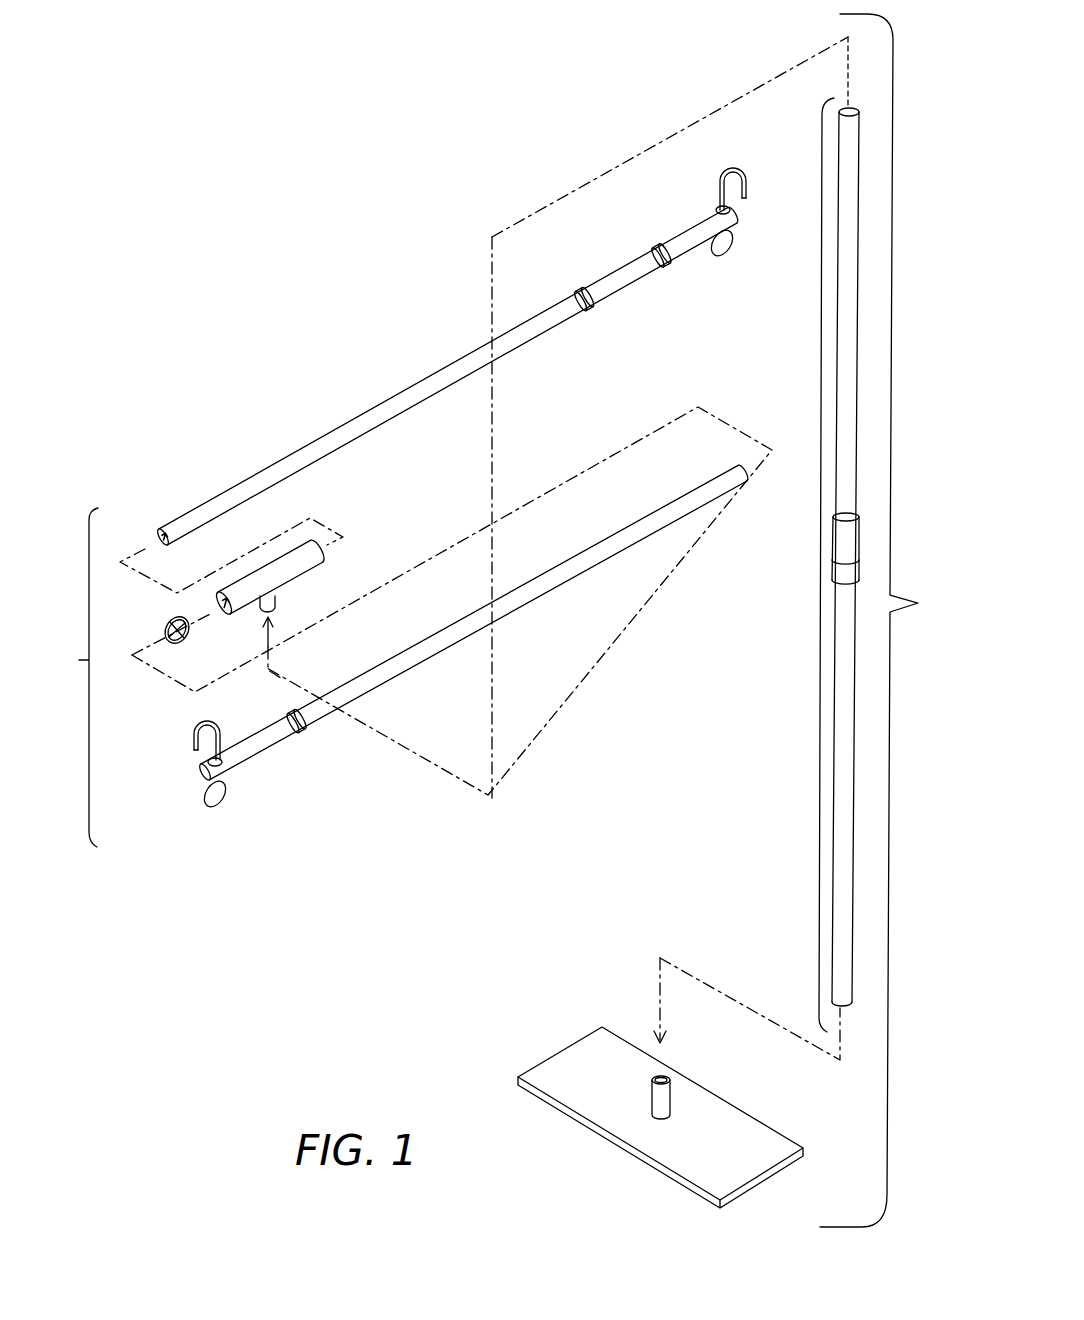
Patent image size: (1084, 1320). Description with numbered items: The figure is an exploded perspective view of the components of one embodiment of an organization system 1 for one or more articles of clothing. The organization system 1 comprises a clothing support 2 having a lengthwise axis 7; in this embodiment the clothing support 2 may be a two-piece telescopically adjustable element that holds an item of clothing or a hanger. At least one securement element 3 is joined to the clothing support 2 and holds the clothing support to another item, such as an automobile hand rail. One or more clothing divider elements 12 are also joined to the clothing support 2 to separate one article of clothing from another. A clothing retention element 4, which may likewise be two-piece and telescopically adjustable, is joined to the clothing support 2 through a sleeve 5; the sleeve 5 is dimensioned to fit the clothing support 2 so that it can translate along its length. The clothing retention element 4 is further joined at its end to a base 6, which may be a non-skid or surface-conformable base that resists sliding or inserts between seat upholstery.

The organization system 1 is at (889, 620).
The clothing support 2 is at (402, 378).
The securement element 3 is at (728, 153).
The clothing retention element 4 is at (826, 538).
The sleeve 5 is at (307, 585).
The base 6 is at (603, 1017).
The lengthwise axis 7 is at (138, 540).
The clothing divider element 12 is at (565, 287).